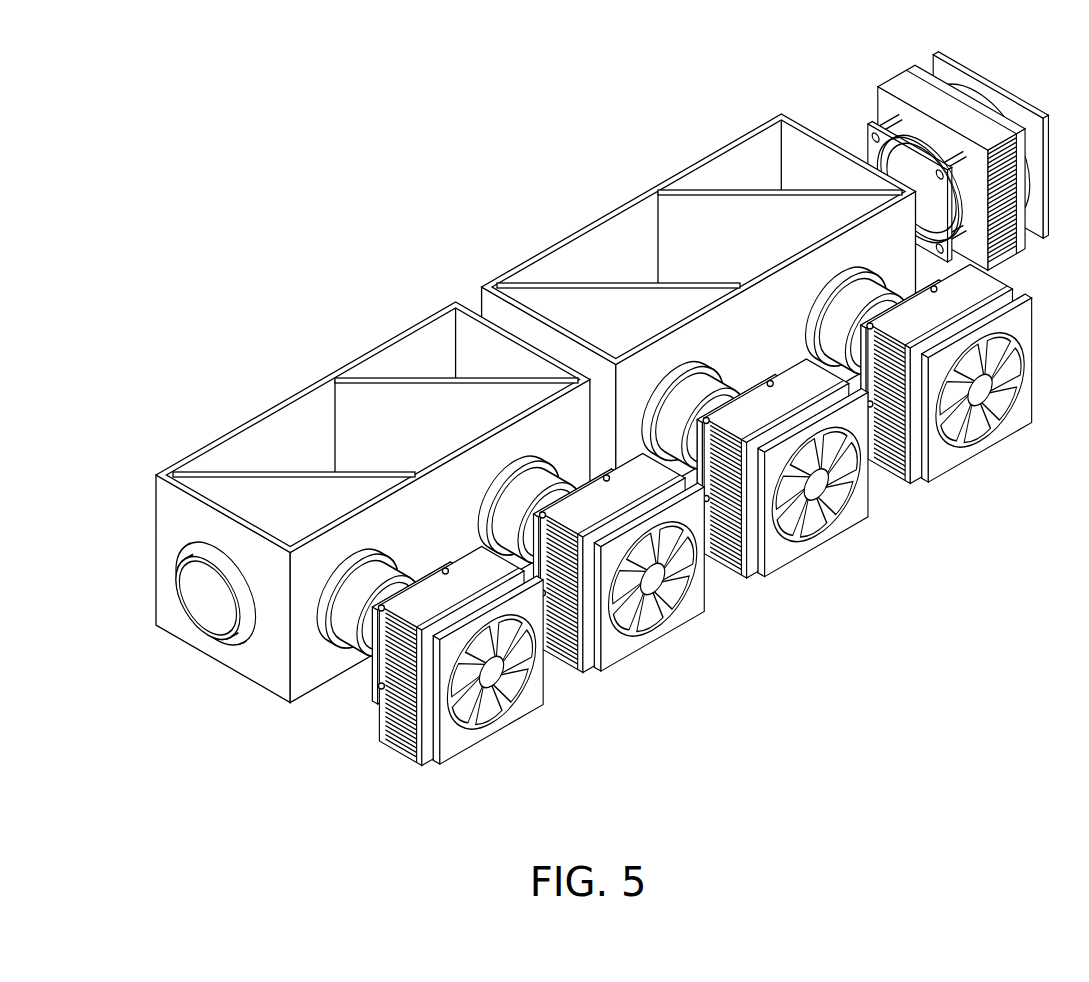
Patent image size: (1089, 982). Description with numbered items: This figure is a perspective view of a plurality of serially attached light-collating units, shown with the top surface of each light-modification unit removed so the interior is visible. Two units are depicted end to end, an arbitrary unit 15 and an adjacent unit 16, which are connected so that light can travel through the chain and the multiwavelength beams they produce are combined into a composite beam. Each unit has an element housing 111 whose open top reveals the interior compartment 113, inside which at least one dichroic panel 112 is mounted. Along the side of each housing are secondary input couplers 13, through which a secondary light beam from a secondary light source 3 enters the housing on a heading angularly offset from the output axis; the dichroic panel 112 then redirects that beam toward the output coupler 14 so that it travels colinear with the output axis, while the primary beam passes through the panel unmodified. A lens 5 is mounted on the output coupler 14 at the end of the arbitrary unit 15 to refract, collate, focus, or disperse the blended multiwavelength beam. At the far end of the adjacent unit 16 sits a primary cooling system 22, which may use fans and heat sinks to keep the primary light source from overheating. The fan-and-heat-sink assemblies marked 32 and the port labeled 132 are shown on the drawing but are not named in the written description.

The secondary light source 3 is at (527, 490).
The lens 5 is at (190, 608).
The secondary input coupler 13 is at (518, 462).
The output coupler 14 is at (250, 617).
The arbitrary unit 15 is at (313, 308).
The adjacent unit 16 is at (639, 121).
The primary cooling system 22 is at (906, 78).
The fan 32 is at (462, 746).
The element housing 111 is at (253, 420).
The dichroic panel 112 is at (383, 381).
The interior compartment 113 is at (311, 413).
The connecting pipe 132 is at (355, 552).